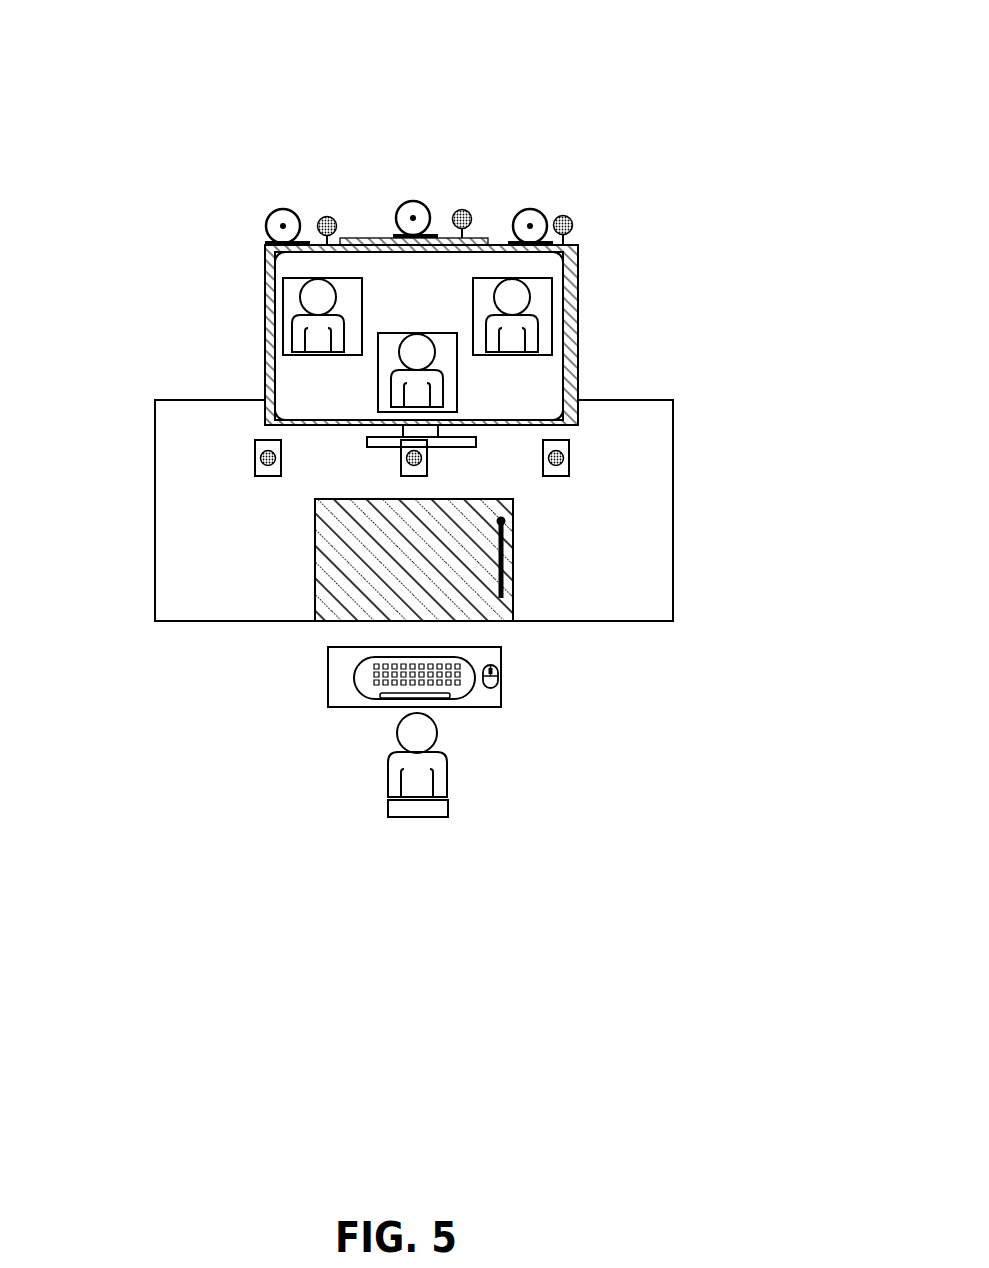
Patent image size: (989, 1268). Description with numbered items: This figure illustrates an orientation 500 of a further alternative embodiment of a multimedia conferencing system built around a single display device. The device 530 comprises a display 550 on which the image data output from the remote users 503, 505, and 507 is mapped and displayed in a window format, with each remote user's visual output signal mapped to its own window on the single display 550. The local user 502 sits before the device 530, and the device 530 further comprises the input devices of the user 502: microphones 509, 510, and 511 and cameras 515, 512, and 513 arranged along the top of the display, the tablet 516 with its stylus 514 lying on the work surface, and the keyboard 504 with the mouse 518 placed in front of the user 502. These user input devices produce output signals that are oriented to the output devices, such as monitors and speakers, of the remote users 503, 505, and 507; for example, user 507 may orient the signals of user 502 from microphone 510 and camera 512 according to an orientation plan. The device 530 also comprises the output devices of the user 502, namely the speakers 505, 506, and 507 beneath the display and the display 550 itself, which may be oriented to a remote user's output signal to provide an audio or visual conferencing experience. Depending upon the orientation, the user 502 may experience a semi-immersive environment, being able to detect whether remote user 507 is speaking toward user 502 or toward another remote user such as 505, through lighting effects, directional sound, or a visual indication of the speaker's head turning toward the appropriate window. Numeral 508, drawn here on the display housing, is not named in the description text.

The orientation 500 is at (134, 52).
The user 502 is at (453, 767).
The user 503 is at (333, 278).
The keyboard 504 is at (472, 660).
The user / speaker 505 is at (388, 332).
The speaker 506 is at (428, 470).
The user / speaker 507 is at (482, 356).
The display monitor 508 is at (593, 317).
The microphone 509 is at (570, 220).
The microphone 510 is at (465, 211).
The microphone 511 is at (330, 218).
The camera 512 is at (543, 212).
The camera 513 is at (400, 203).
The stylus 514 is at (507, 552).
The camera 515 is at (278, 210).
The tablet 516 is at (330, 595).
The mouse 518 is at (500, 682).
The device 530 is at (738, 403).
The display 550 is at (293, 367).